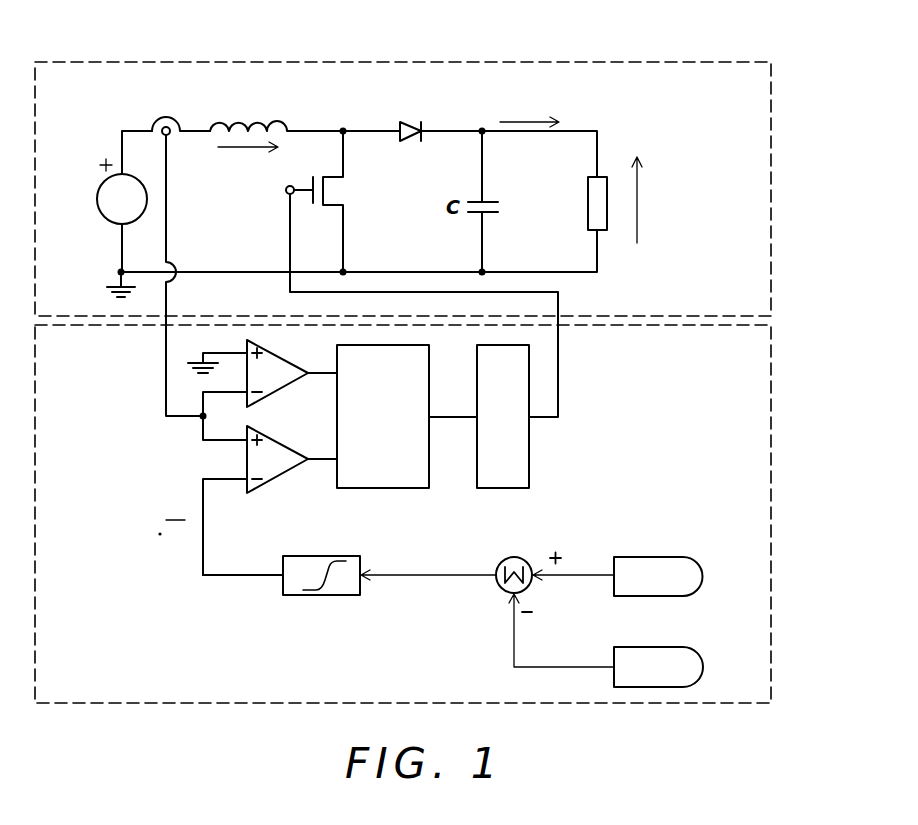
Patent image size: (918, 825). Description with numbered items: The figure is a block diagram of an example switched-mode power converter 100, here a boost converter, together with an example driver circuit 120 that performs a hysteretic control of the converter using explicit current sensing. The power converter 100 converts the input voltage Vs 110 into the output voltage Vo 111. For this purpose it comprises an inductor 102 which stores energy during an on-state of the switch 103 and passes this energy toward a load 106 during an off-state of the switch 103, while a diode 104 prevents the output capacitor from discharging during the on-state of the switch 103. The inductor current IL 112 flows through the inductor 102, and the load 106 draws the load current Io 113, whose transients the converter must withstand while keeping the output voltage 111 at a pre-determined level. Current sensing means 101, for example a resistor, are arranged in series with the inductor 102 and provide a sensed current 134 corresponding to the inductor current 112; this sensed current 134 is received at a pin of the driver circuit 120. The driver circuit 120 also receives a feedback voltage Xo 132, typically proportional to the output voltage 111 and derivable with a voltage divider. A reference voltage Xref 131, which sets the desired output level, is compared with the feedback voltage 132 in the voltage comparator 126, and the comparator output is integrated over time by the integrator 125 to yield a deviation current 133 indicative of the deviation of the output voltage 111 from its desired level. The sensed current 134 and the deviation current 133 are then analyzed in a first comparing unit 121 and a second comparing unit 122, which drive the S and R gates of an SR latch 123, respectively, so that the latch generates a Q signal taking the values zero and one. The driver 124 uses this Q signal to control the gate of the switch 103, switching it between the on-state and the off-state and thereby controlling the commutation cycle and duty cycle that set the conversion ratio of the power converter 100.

The switched-mode power converter 100 is at (771, 243).
The current sensing means 101 is at (170, 117).
The inductor 102 is at (283, 120).
The switch 103 is at (344, 192).
The diode 104 is at (402, 146).
The load 106 is at (588, 221).
The input voltage Vs 110 is at (92, 203).
The output voltage Vo 111 is at (644, 162).
The inductor current IL 112 is at (219, 148).
The load current Io 113 is at (503, 122).
The driver circuit 120 is at (771, 470).
The first comparing unit 121 is at (227, 379).
The second comparing unit 122 is at (228, 460).
The SR latch 123 is at (377, 488).
The driver 124 is at (490, 488).
The integrator 125 is at (303, 556).
The voltage comparator 126 is at (501, 593).
The reference voltage Xref 131 is at (635, 557).
The feedback voltage Xo 132 is at (543, 667).
The deviation current 133 is at (245, 575).
The sensed current 134 is at (165, 407).